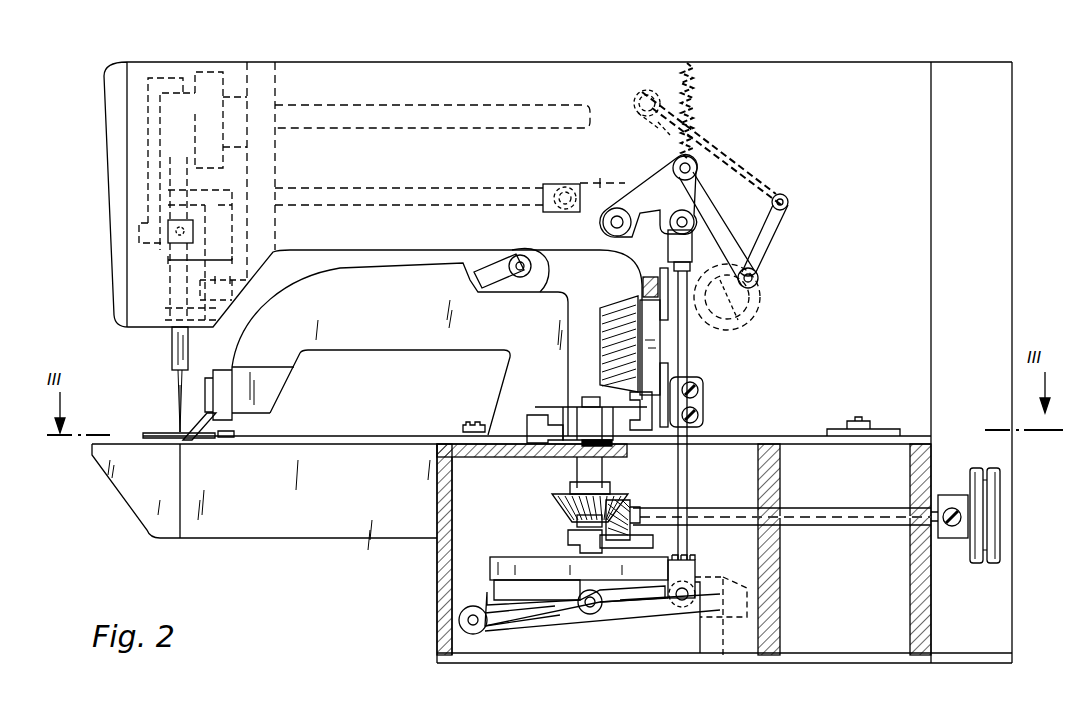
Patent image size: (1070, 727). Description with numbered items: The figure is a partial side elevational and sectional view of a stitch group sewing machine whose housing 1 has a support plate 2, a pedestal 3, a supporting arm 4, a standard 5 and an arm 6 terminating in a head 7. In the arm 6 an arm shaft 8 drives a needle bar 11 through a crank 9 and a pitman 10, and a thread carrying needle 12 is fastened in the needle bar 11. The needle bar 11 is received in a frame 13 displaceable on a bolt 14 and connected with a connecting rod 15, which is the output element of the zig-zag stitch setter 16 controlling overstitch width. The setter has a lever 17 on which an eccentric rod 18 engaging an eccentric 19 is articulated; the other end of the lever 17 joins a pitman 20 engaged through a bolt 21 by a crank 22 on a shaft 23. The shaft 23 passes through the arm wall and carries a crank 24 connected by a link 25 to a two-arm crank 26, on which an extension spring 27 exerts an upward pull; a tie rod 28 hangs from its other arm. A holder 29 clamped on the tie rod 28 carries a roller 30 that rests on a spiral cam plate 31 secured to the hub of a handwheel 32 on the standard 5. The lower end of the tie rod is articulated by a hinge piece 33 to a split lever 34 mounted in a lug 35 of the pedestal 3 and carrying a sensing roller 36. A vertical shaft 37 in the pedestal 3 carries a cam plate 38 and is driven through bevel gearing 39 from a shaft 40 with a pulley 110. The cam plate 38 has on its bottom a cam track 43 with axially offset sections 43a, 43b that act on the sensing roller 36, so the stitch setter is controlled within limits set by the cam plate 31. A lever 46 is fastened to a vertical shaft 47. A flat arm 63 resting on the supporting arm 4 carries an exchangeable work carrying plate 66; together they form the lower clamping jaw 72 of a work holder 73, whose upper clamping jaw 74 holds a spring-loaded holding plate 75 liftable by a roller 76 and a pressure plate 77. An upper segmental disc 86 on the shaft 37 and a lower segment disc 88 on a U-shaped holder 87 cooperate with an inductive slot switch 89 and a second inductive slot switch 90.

The housing 1 is at (430, 549).
The support plate 2 is at (518, 655).
The pedestal 3 is at (437, 620).
The supporting arm 4 is at (296, 532).
The standard 5 is at (887, 329).
The arm 6 is at (428, 90).
The head 7 is at (156, 326).
The arm shaft 8 is at (505, 112).
The crank 9 is at (220, 95).
The pitman 10 is at (158, 145).
The needle bar 11 is at (166, 265).
The thread carrying needle 12 is at (177, 396).
The frame 13 is at (226, 230).
The bolt 14 is at (232, 285).
The connecting rod 15 is at (396, 200).
The zig-zag stitch setter 16 is at (759, 163).
The lever 17 is at (605, 182).
The eccentric rod 18 is at (792, 220).
The eccentric 19 is at (752, 312).
The pitman 20 is at (652, 135).
The bolt 21 is at (647, 92).
The crank 22 is at (664, 140).
The shaft 23 is at (789, 200).
The crank 24 is at (762, 263).
The link 25 is at (706, 213).
The two-arm crank 26 is at (650, 213).
The extension spring 27 is at (693, 103).
The tie rod 28 is at (690, 462).
The holder 29 is at (703, 400).
The roller 30 is at (664, 430).
The spiral cam plate 31 is at (660, 272).
The handwheel 32 is at (616, 312).
The hinge piece 33 is at (698, 572).
The split lever 34 is at (650, 612).
The lug 35 is at (470, 628).
The sensing roller 36 is at (603, 600).
The shaft 37 is at (568, 545).
The cam plate 38 is at (508, 560).
The bevel gearing 39 is at (605, 505).
The shaft 40 is at (718, 510).
The cam track 43 is at (483, 586).
The axially offset section 43a is at (542, 600).
The axially offset section 43b is at (665, 592).
The lever 46 is at (628, 548).
The shaft 47 is at (575, 520).
The arm 63 is at (405, 437).
The work carrying plate 66 is at (152, 436).
The lower clamping jaw 72 is at (319, 437).
The work holder 73 is at (280, 395).
The upper clamping jaw 74 is at (352, 352).
The holding plate 75 is at (188, 432).
The roller 76 is at (505, 275).
The pressure plate 77 is at (540, 252).
The upper segmental disc 86 is at (562, 412).
The U-shaped holder 87 is at (530, 418).
The lower segment disc 88 is at (545, 445).
The inductive slot switch 89 is at (632, 398).
The second inductive slot switch 90 is at (525, 428).
The pulley 110 is at (964, 560).